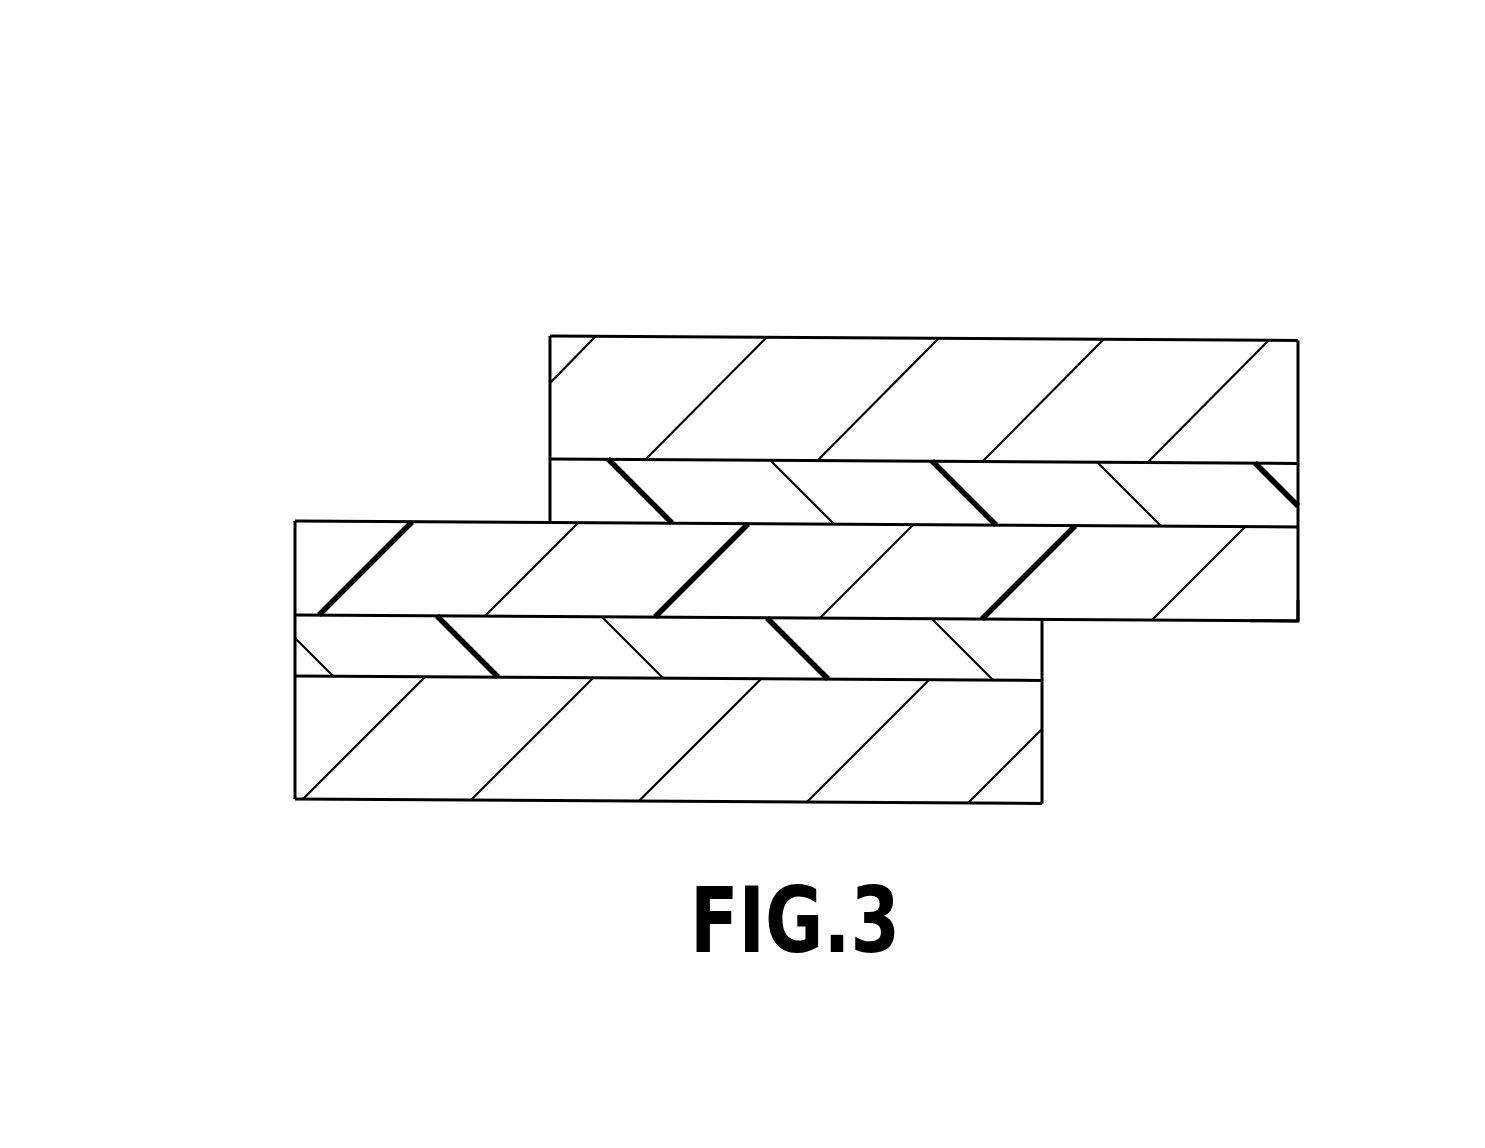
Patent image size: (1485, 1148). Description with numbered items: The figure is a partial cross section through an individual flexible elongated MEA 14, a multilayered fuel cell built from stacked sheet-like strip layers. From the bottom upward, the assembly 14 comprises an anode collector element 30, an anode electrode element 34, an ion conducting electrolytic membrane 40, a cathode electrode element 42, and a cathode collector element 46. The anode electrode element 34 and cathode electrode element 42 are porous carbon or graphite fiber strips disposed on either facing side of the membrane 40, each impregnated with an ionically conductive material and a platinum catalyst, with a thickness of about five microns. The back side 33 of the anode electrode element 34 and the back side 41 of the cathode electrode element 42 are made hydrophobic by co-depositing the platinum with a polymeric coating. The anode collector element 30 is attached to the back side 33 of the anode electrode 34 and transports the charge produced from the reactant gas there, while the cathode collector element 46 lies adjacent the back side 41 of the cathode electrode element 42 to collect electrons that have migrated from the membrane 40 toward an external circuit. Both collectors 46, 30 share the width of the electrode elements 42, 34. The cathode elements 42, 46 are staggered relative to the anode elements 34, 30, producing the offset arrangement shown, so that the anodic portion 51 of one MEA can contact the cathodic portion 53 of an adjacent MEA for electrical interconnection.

The flexible elongated MEA 14 is at (822, 463).
The anode collector element 30 is at (1030, 768).
The back side of anode electrode 33 is at (295, 677).
The anode electrode element 34 is at (1053, 652).
The ion conducting electrolytic membrane 40 is at (1310, 553).
The back side of cathode electrode 41 is at (548, 458).
The cathode electrode element 42 is at (1235, 480).
The cathode collector element 46 is at (966, 355).
The anodic portion 51 is at (338, 518).
The cathodic portion 53 is at (1268, 623).